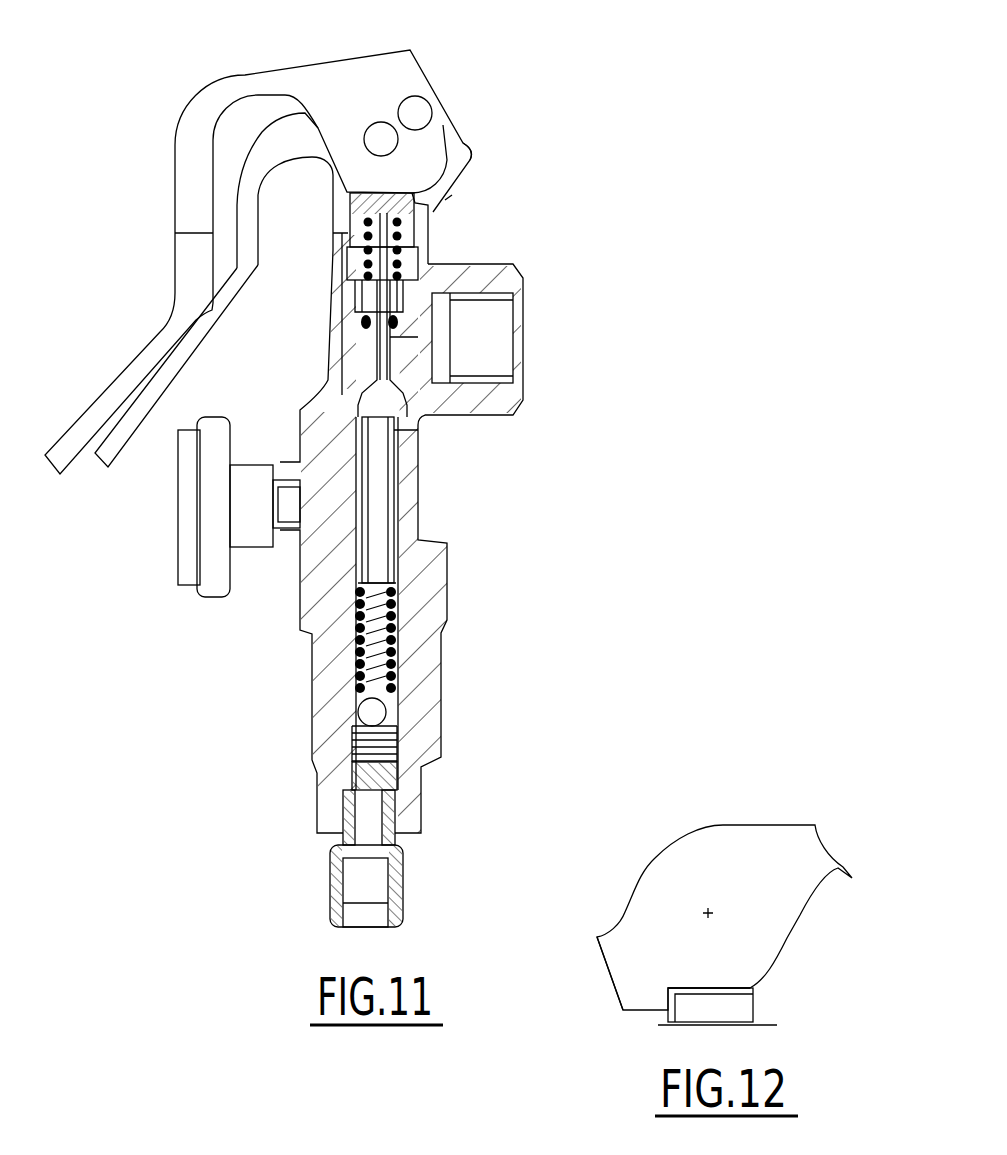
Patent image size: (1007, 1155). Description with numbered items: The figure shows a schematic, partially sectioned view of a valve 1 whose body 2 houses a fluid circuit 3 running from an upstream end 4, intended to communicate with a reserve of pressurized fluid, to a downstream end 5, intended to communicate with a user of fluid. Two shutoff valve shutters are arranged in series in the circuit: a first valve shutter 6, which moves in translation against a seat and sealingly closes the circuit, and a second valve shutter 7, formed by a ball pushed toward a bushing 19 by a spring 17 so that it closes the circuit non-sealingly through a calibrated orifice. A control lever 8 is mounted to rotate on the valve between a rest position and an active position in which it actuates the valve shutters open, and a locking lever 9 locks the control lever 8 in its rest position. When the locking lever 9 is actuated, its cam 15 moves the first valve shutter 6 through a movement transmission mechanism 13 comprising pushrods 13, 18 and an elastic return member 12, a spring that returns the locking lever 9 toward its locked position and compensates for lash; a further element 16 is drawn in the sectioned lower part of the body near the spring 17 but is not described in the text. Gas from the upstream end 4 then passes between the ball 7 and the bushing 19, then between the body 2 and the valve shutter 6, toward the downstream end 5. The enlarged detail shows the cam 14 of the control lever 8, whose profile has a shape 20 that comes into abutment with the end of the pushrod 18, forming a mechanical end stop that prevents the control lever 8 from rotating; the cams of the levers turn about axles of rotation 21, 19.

In FIG. 11, the valve 1 is at (568, 648).
In FIG. 11, the body 2 is at (320, 608).
In FIG. 11, the fluid circuit 3 is at (395, 511).
In FIG. 11, the upstream end 4 is at (338, 932).
In FIG. 11, the downstream end 5 is at (535, 354).
In FIG. 11, the first valve shutter 6 is at (398, 433).
In FIG. 11, the second valve shutter 7 is at (355, 755).
In FIG. 11, the control lever 8 is at (102, 392).
In FIG. 12, the control lever 8 is at (738, 858).
In FIG. 11, the locking lever 9 is at (121, 443).
In FIG. 11, the return member 12 is at (402, 265).
In FIG. 11, the movement transmission mechanism 13 is at (390, 368).
In FIG. 11, the cam 14 is at (459, 147).
In FIG. 12, the cam 14 is at (603, 965).
In FIG. 11, the cam 15 is at (465, 185).
In FIG. 11, the spring 16 is at (350, 662).
In FIG. 11, the spring 17 is at (350, 770).
In FIG. 12, the pushrod 18 is at (743, 1008).
In FIG. 11, the bushing 19 is at (416, 112).
In FIG. 12, the shape 20 is at (665, 990).
In FIG. 11, the axle of rotation 21 is at (381, 137).